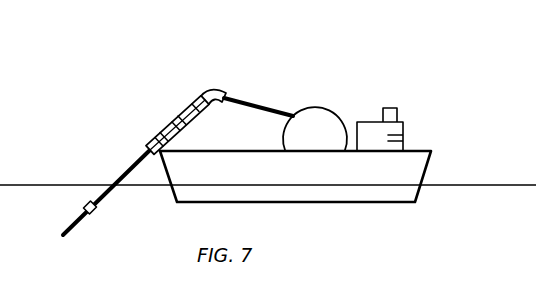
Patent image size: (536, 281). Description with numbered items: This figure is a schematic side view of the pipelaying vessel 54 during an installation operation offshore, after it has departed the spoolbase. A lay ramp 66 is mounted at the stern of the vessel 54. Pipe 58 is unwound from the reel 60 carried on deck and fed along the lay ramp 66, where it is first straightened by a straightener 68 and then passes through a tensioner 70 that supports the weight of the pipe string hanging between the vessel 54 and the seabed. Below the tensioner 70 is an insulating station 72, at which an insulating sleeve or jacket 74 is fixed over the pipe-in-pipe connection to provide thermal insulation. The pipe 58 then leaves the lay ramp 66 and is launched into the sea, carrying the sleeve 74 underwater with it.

The pipelaying vessel 54 is at (375, 76).
The pipe 58 is at (123, 171).
The reel 60 is at (318, 106).
The lay ramp 66 is at (190, 124).
The straightener 68 is at (193, 101).
The tensioner 70 is at (175, 119).
The insulating station 72 is at (157, 140).
The insulating sleeve 74 is at (93, 214).